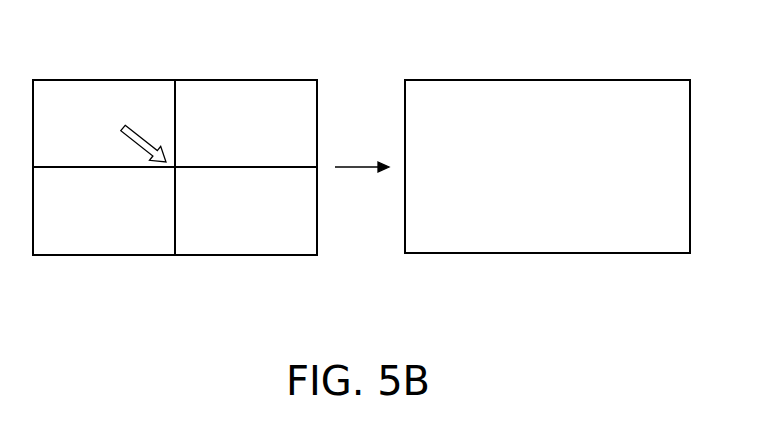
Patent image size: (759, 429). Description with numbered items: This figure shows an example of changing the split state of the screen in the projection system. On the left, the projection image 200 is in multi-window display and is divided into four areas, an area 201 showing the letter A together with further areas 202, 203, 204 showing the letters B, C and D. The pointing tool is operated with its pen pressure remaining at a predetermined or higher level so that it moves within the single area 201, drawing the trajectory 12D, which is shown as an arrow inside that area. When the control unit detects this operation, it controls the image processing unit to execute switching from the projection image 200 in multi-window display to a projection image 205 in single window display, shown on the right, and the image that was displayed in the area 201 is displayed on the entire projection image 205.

The projection image 200 is at (220, 80).
The area 201 is at (63, 100).
The second display region (B) 202 is at (286, 98).
The third display region (C) 203 is at (74, 242).
The fourth display region (D) 204 is at (277, 242).
The trajectory 12D is at (136, 128).
The projection image 205 is at (562, 80).